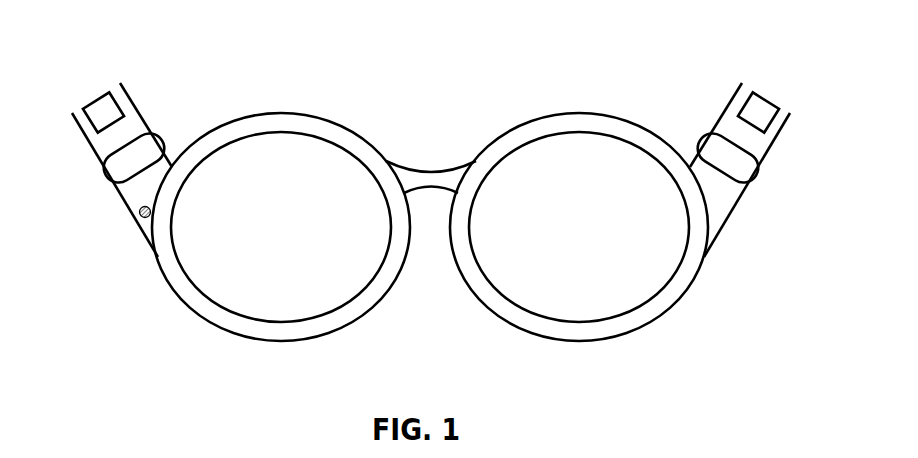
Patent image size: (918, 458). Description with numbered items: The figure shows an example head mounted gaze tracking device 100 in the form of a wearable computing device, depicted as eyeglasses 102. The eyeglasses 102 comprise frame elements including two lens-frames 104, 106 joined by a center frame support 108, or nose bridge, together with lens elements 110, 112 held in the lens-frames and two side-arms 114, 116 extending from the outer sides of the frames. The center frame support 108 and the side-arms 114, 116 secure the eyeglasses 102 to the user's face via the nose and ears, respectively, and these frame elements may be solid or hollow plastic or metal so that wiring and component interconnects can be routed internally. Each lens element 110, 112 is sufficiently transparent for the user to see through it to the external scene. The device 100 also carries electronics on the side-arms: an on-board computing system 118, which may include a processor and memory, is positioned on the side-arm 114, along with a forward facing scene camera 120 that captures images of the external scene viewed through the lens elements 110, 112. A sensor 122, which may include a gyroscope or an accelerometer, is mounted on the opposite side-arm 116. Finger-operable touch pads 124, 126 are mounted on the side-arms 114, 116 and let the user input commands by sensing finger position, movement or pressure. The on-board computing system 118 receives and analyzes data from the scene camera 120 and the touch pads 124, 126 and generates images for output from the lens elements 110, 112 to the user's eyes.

The head mounted gaze tracking device 100 is at (668, 366).
The eyeglasses 102 is at (413, 64).
The lens-frame 104 is at (297, 331).
The lens-frame 106 is at (590, 331).
The center frame support 108 is at (428, 176).
The lens element 110 is at (232, 283).
The lens element 112 is at (527, 285).
The side-arm 114 is at (140, 111).
The side-arm 116 is at (722, 111).
The on-board computing system 118 is at (88, 121).
The scene camera 120 is at (137, 214).
The sensor 122 is at (773, 121).
The finger-operable touch pad 124 is at (118, 168).
The finger-operable touch pad 126 is at (744, 168).